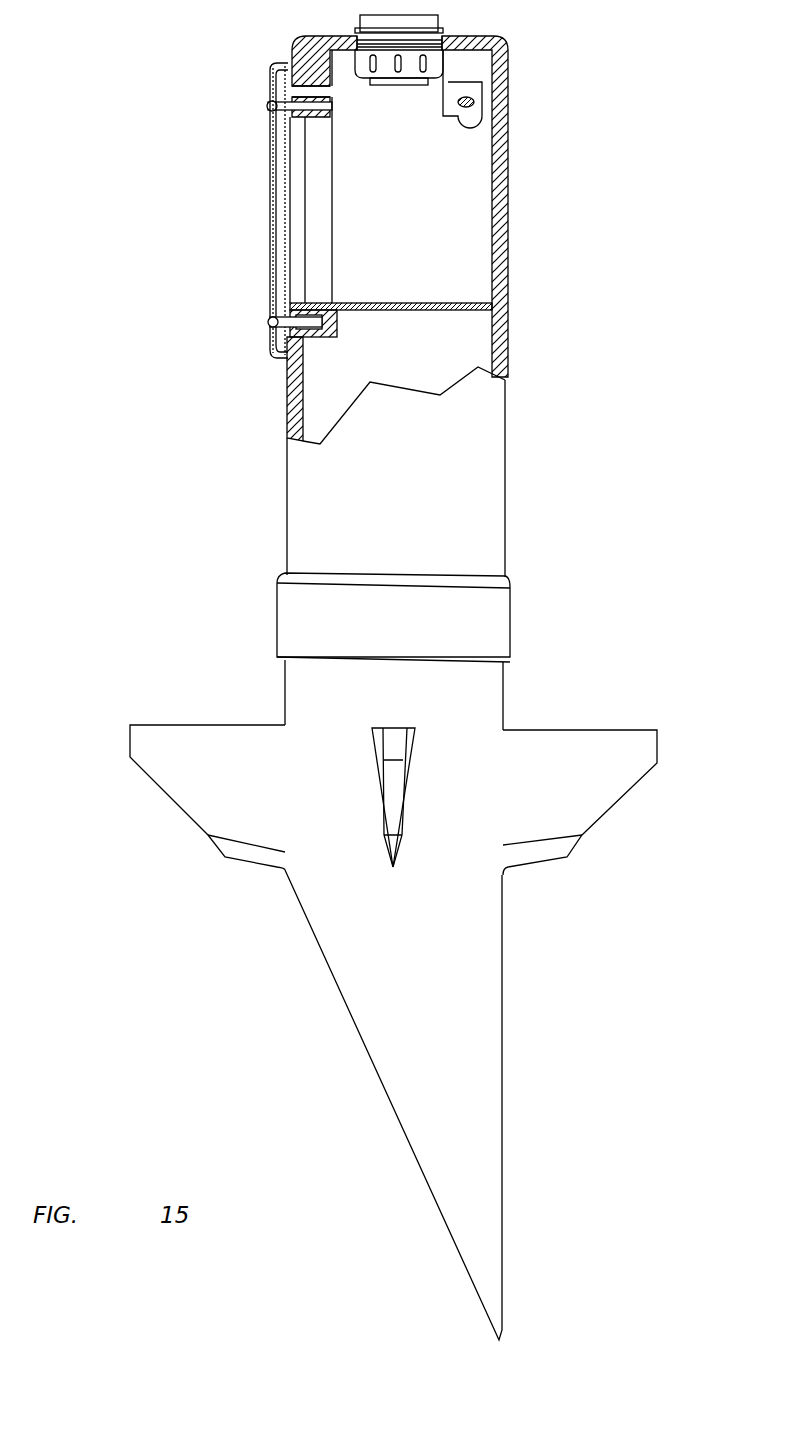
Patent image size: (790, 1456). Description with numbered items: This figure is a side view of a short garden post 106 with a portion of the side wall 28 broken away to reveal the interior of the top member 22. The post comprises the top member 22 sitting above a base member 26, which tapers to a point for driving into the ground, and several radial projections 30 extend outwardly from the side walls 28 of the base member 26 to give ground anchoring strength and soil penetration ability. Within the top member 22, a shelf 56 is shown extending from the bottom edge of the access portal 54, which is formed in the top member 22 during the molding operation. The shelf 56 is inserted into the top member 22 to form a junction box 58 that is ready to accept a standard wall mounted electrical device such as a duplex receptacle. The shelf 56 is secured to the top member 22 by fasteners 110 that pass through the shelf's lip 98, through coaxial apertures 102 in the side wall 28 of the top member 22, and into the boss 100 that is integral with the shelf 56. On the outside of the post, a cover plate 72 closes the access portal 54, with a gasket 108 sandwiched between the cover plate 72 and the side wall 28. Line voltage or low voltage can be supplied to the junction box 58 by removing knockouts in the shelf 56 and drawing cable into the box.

The top member 22 is at (422, 484).
The base member 26 is at (452, 940).
The side wall 28 is at (508, 157).
The radial projections 30 is at (595, 733).
The access portal 54 is at (300, 144).
The shelf 56 is at (453, 303).
The junction box 58 is at (408, 147).
The cover plate 72 is at (273, 207).
The shelf's lip 98 is at (283, 397).
The boss 100 is at (323, 335).
The coaxial apertures 102 is at (325, 303).
The short garden post 106 is at (578, 541).
The gasket 108 is at (287, 253).
The fasteners 110 is at (290, 312).